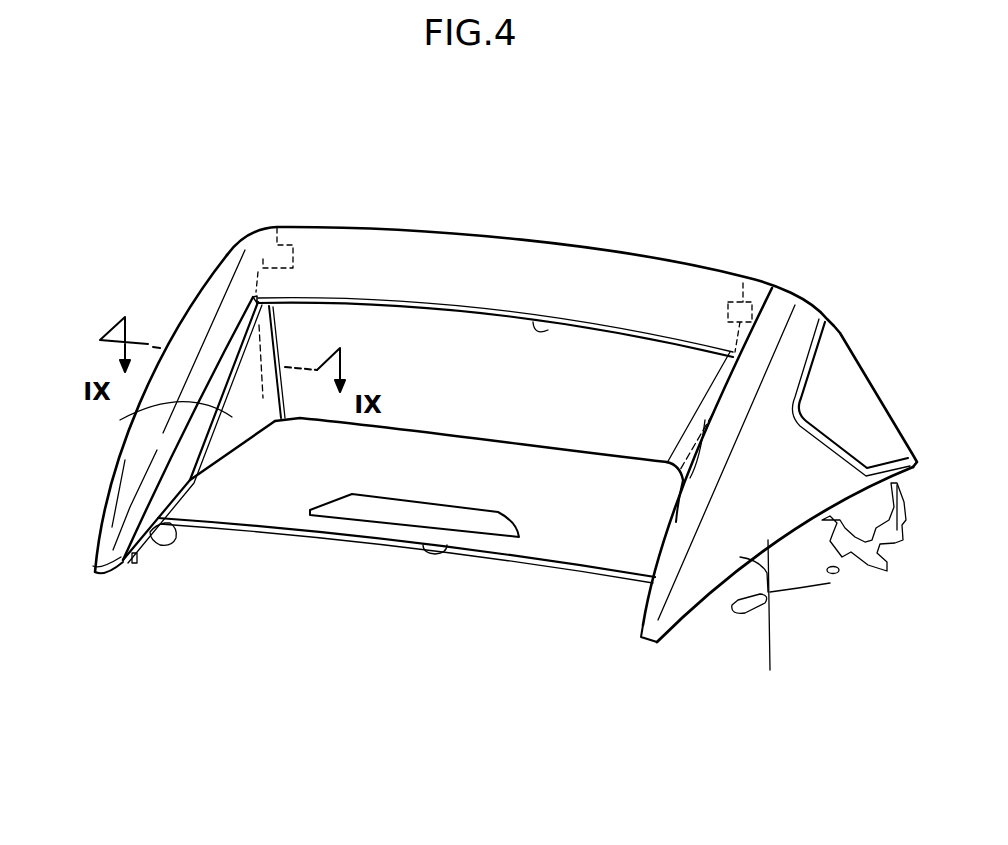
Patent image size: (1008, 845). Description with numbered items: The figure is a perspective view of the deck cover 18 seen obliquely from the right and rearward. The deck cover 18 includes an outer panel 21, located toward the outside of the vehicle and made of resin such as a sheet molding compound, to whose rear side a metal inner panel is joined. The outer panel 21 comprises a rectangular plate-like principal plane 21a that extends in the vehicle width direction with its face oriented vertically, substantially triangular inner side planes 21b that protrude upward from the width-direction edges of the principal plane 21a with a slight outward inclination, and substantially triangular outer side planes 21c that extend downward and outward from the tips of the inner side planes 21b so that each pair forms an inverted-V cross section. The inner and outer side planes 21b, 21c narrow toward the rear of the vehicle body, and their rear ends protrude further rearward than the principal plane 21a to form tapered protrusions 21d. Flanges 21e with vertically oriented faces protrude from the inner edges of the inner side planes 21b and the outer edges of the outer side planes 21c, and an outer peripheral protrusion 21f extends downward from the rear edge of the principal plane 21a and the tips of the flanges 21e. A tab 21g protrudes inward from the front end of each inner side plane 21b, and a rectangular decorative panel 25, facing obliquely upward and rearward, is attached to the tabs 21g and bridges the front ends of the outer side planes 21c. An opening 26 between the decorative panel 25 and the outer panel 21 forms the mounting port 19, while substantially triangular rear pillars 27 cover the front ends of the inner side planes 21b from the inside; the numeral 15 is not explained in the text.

The roof panel 15 is at (470, 355).
The deck cover 18 is at (205, 292).
The mounting port 19 is at (533, 322).
The outer panel 21 is at (730, 557).
The principal plane 21a is at (557, 537).
The inner side planes 21b is at (173, 480).
The outer side planes 21c is at (140, 460).
The tapered protrusions 21d is at (99, 575).
The flanges 21e is at (147, 535).
The outer peripheral protrusion 21f is at (150, 543).
The tab 21g is at (277, 227).
The decorative panel 25 is at (350, 252).
The opening 26 is at (520, 436).
The rear pillars 27 is at (120, 420).